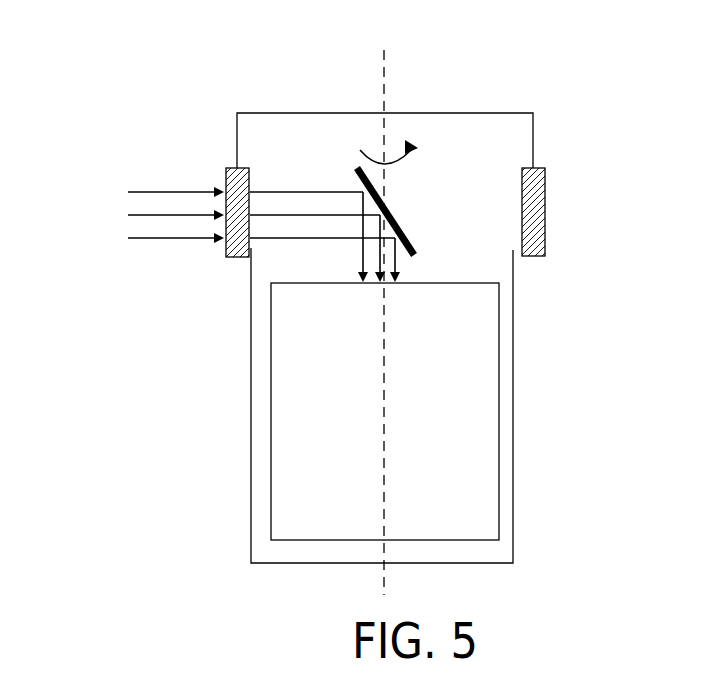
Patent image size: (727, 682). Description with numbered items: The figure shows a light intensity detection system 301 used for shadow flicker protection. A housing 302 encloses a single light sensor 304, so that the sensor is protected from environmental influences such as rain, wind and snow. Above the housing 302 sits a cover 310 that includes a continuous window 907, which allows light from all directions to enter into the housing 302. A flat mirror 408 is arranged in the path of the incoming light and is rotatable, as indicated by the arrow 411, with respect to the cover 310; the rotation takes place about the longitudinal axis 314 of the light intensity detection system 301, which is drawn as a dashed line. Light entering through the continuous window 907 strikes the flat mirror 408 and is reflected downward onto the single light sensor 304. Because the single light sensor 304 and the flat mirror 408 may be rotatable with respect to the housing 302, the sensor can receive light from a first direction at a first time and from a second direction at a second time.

The light intensity detection system 301 is at (339, 302).
The cover 310 is at (533, 120).
The continuous window 907 is at (230, 257).
The housing 302 is at (515, 402).
The single light sensor 304 is at (500, 510).
The longitudinal axis 314 is at (383, 53).
The flat mirror 408 is at (403, 228).
The arrow 411 is at (413, 152).